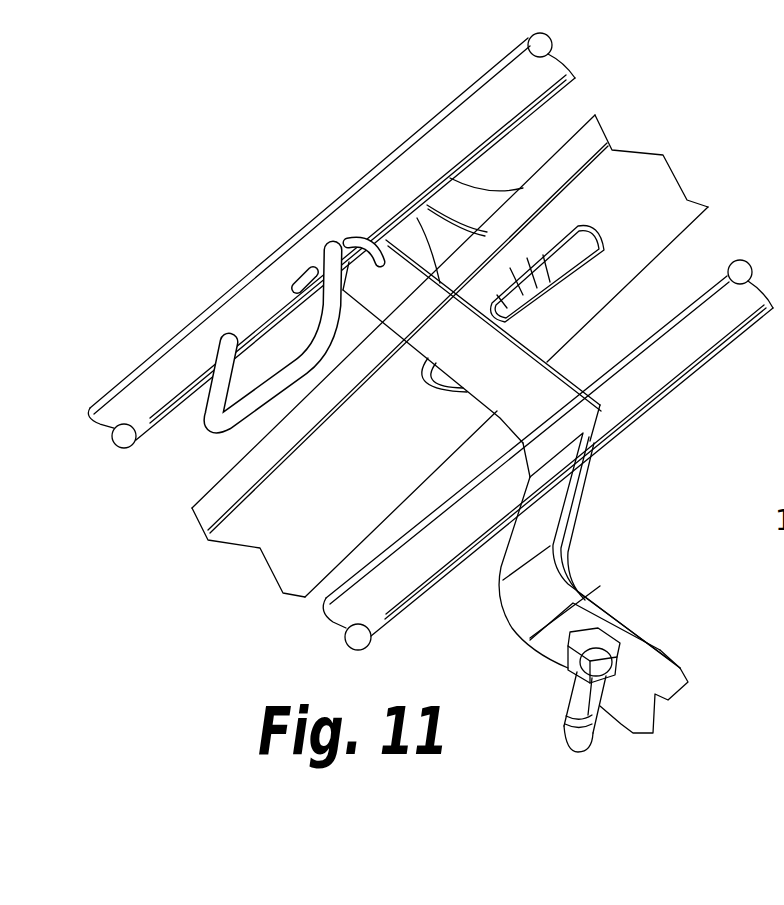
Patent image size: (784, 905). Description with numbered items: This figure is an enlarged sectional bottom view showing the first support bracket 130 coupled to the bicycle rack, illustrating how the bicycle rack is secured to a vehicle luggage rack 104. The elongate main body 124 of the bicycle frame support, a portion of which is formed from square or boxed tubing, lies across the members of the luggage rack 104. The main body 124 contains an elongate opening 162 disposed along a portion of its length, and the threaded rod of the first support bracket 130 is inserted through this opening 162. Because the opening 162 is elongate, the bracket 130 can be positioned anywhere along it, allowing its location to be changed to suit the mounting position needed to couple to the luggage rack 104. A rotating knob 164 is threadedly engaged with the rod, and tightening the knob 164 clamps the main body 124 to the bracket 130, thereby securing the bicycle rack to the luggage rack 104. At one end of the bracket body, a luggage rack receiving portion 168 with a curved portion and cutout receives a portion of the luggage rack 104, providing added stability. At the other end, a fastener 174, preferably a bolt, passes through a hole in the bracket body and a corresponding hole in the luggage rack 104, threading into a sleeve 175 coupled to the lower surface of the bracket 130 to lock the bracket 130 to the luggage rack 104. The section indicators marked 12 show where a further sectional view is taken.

The section line indicator 12 is at (298, 180).
The luggage rack 104 is at (450, 135).
The elongate main body 124 is at (642, 188).
The first support bracket 130 is at (497, 380).
The elongate opening 162 is at (545, 282).
The rotating knob 164 is at (473, 203).
The luggage rack receiving portion 168 is at (353, 260).
The fastener 174 is at (577, 748).
The sleeve 175 is at (580, 690).